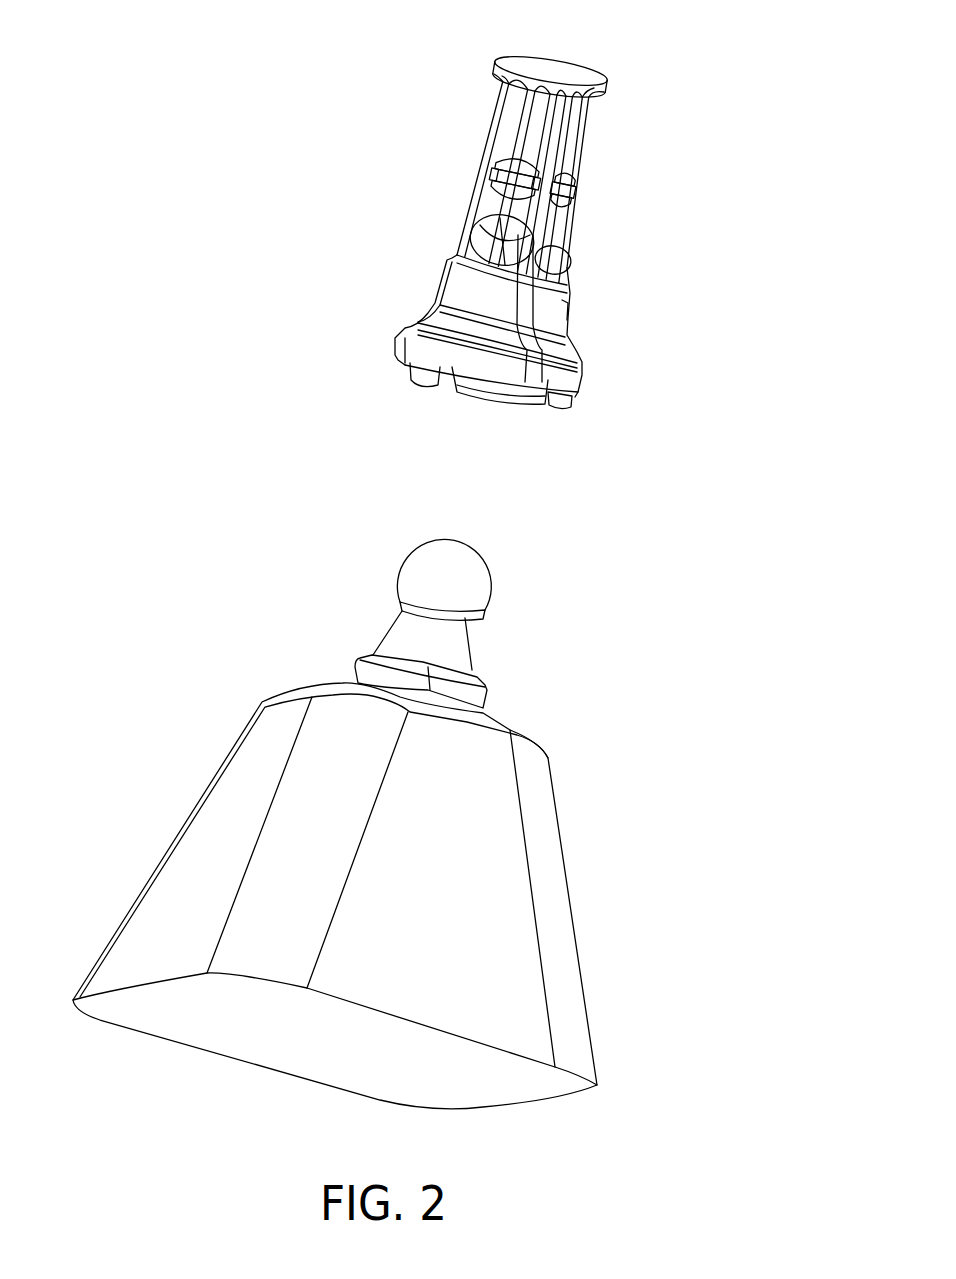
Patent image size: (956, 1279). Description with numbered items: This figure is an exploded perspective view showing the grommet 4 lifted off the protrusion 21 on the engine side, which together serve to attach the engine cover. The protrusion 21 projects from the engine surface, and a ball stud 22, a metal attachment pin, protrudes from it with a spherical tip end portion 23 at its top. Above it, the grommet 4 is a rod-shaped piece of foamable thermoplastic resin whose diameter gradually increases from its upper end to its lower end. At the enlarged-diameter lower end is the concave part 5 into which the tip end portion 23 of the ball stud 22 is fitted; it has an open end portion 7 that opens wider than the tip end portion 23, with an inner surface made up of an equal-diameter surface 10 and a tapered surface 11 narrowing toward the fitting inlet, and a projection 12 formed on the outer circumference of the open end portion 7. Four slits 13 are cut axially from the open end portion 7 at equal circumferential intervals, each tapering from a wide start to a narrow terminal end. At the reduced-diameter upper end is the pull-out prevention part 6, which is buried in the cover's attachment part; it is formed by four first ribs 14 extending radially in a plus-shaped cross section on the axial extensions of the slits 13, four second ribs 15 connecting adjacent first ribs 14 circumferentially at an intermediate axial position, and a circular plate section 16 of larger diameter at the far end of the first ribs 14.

The grommet 4 is at (440, 242).
The concave part 5 is at (568, 330).
The pull-out prevention part 6 is at (582, 160).
The open end portion 7 is at (528, 407).
The equal-diameter surface 10 is at (425, 373).
The tapered surface 11 is at (522, 372).
The projection 12 is at (583, 382).
The slits 13 is at (577, 310).
The first ribs 14 is at (502, 115).
The second ribs 15 is at (505, 178).
The circular plate section 16 is at (552, 60).
The protrusion 21 is at (556, 907).
The ball stud 22 is at (455, 640).
The tip end portion 23 is at (470, 563).